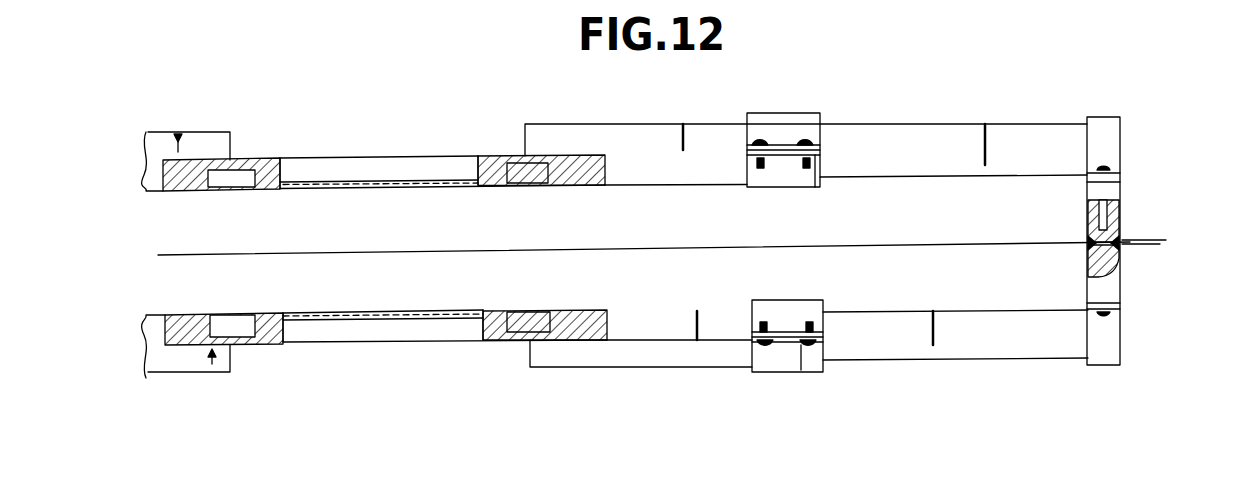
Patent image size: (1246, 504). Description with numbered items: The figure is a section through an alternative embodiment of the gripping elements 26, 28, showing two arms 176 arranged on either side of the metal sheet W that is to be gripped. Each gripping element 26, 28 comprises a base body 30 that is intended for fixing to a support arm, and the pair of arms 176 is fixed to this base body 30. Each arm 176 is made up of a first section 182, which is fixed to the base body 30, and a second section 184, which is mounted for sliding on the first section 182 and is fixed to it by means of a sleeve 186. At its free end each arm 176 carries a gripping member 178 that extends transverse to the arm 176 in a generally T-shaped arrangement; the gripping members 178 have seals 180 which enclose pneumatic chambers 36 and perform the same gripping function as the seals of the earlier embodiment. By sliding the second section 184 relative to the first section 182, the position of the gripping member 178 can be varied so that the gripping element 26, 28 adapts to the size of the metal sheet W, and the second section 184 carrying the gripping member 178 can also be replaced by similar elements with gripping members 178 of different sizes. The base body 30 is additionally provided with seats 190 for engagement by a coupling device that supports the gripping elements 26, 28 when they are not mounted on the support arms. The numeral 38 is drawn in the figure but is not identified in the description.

The gripping element 26 is at (776, 112).
The gripping element 28 is at (798, 376).
The base body 30 is at (496, 152).
The pneumatic chamber 36 is at (1088, 240).
The insert 38 is at (1120, 222).
The arm 176 is at (918, 120).
The gripping member 178 is at (1114, 187).
The seal 180 is at (1122, 250).
The first section 182 is at (152, 192).
The second section 184 is at (999, 171).
The sleeve 186 is at (785, 176).
The seat 190 is at (222, 191).
The metal sheet W is at (897, 245).